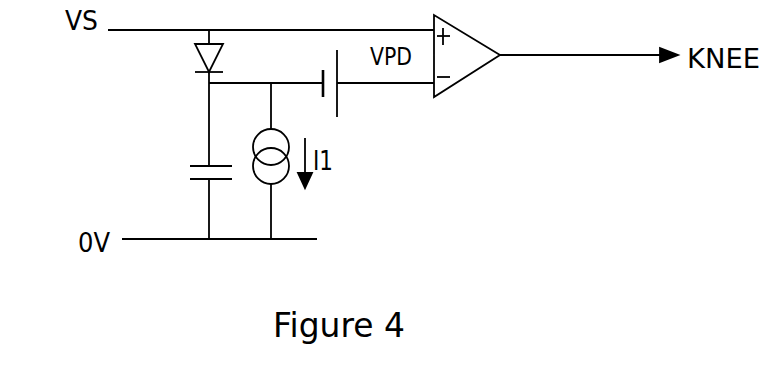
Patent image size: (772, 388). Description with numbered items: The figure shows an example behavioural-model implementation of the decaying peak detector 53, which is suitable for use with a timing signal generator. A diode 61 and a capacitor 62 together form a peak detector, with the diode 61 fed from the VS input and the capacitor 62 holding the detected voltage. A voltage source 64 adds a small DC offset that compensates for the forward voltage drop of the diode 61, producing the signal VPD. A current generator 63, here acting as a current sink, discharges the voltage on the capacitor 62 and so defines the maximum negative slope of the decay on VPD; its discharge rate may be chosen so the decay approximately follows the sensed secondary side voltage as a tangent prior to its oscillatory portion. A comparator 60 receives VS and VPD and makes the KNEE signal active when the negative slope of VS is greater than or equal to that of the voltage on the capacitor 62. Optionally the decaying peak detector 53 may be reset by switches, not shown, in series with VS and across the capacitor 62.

The decaying peak detector 53 is at (82, 298).
The comparator 60 is at (476, 56).
The diode 61 is at (223, 59).
The capacitor 62 is at (187, 177).
The current generator 63 is at (259, 148).
The voltage source 64 is at (346, 93).